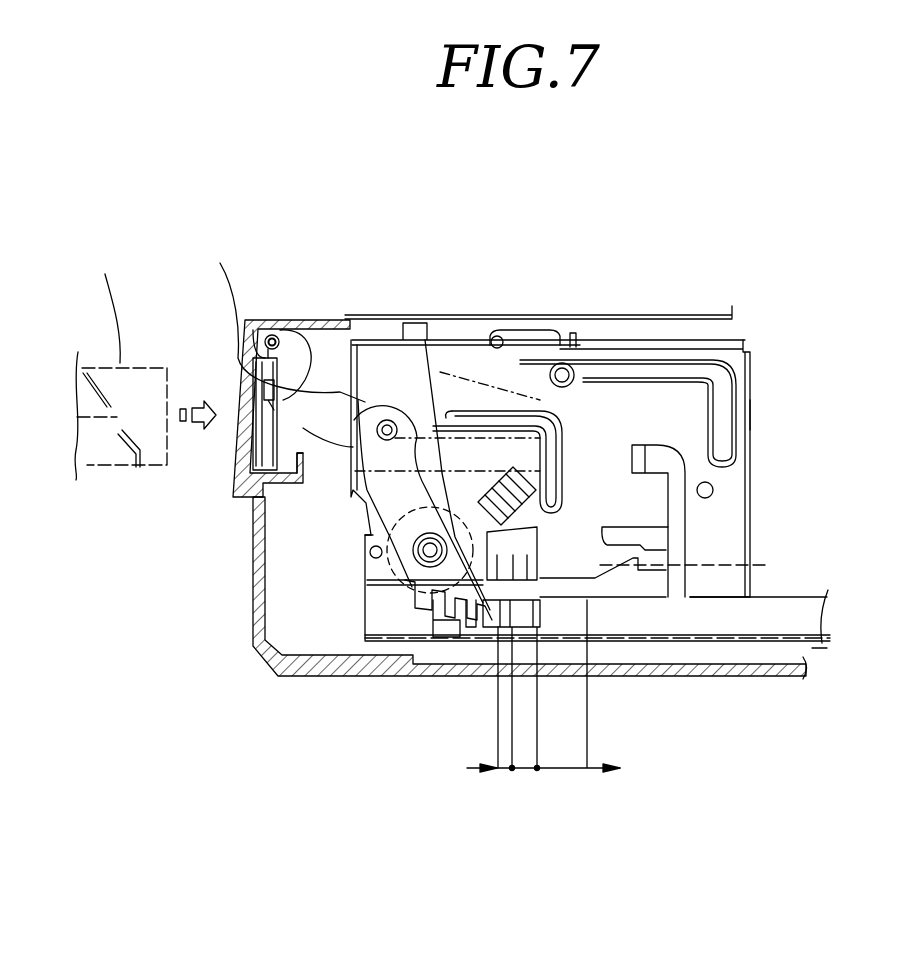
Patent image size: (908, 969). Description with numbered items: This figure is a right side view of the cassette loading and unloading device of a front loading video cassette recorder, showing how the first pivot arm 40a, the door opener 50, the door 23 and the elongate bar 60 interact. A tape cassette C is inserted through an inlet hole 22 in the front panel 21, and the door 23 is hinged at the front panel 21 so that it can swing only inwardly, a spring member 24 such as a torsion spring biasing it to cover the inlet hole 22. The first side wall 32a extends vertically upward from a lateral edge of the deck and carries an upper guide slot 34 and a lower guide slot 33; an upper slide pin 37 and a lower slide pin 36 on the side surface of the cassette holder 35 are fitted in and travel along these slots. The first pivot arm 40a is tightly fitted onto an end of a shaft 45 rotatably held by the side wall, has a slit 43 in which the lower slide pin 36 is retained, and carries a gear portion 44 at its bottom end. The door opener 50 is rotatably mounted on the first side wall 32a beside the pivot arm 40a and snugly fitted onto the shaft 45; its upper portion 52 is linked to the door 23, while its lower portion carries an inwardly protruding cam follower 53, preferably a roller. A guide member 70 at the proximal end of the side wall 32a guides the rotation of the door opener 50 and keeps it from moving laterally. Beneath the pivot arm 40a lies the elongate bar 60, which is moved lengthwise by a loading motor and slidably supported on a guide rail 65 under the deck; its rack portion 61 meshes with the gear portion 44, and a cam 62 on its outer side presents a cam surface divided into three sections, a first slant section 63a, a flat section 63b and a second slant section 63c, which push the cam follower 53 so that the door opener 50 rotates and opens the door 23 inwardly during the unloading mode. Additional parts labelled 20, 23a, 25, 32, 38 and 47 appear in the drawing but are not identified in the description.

The tape cassette C is at (145, 362).
The vehicle body panel 20 is at (787, 670).
The front panel 21 is at (253, 640).
The inlet hole 22 is at (243, 457).
The door 23 is at (281, 340).
The hinge arm 23a is at (313, 338).
The spring member 24 is at (273, 334).
The hinge pin 25 is at (312, 338).
The bracket 32 is at (750, 351).
The first side wall 32a is at (743, 413).
The lower guide slot 33 is at (440, 405).
The upper guide slot 34 is at (684, 360).
The cassette holder 35 is at (594, 394).
The lower slide pin 36 is at (387, 339).
The upper slide pin 37 is at (580, 372).
The hole 38 is at (370, 556).
The first pivot arm 40a is at (369, 534).
The slit 43 is at (425, 340).
The gear portion 44 is at (563, 603).
The shaft 45 is at (371, 600).
The gear 47 is at (415, 567).
The door opener 50 is at (324, 448).
The upper portion 52 is at (250, 383).
The cam follower 53 is at (470, 627).
The elongate bar 60 is at (684, 643).
The rack portion 61 is at (450, 622).
The cam 62 is at (585, 612).
The first slant section 63a is at (498, 770).
The flat section 63b is at (527, 770).
The second slant section 63c is at (570, 770).
The guide rail 65 is at (805, 660).
The guide member 70 is at (382, 421).